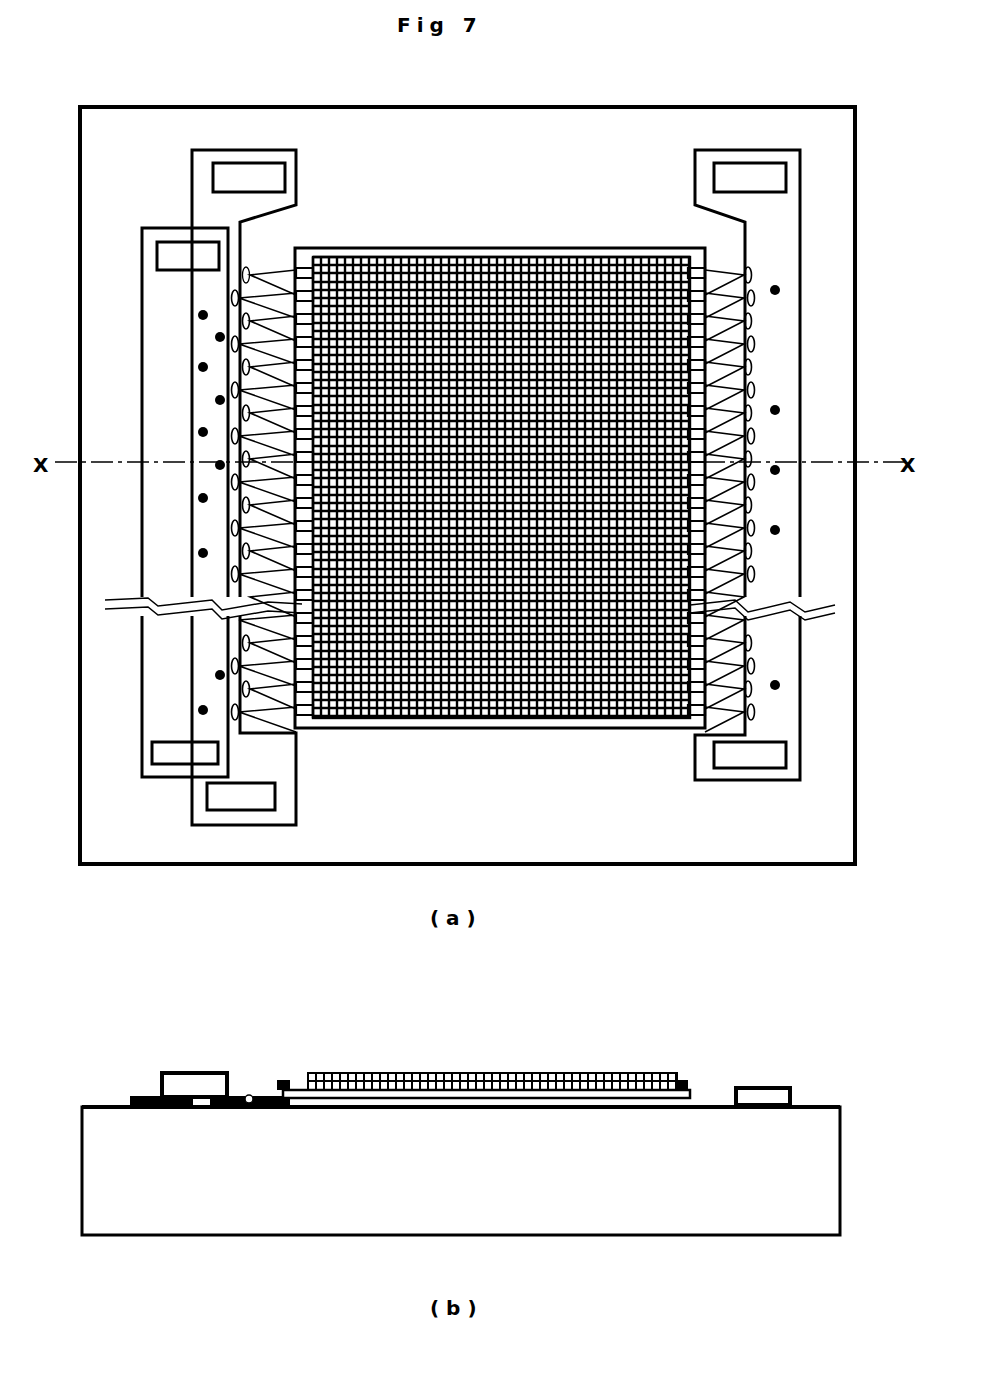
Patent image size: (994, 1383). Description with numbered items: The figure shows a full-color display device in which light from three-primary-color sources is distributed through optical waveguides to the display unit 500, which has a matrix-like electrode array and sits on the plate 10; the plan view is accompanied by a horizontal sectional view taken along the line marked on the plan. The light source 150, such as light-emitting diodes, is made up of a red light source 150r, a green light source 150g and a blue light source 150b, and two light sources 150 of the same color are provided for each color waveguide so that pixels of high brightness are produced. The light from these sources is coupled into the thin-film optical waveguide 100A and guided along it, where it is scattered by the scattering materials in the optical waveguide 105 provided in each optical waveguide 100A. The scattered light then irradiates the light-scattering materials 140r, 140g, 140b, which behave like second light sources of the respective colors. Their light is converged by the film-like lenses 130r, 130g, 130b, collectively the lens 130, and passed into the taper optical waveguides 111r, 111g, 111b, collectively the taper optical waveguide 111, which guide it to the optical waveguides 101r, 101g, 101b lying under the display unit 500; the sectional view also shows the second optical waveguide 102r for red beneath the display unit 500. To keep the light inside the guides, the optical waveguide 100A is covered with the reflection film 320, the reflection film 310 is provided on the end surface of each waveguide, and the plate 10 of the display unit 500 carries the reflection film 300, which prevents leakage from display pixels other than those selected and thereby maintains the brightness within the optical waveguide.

The plate 10 is at (468, 185).
The optical waveguide 100A is at (473, 661).
The scattering materials in the optical waveguide 105 is at (150, 655).
The lens 130 is at (248, 264).
The lens 130r is at (222, 466).
The lens 130b is at (206, 498).
The lens 130g is at (787, 445).
The light-scattering material 140r is at (215, 402).
The light-scattering material 140b is at (203, 315).
The light-scattering material 140g is at (777, 352).
The light source 150 is at (233, 172).
The light source 150r is at (297, 486).
The light source 150b is at (192, 255).
The light source 150g is at (753, 180).
The taper optical waveguide 111 is at (283, 723).
The taper optical waveguide 111r is at (265, 265).
The taper optical waveguide 111b is at (270, 318).
The taper optical waveguide 111g is at (725, 533).
The first optical waveguide 101r is at (332, 292).
The first optical waveguide 101g is at (706, 285).
The first optical waveguide 101b is at (345, 312).
The second optical waveguide 102r is at (308, 1075).
The reflection film 300 is at (465, 718).
The reflection film 310 is at (362, 730).
The reflection film 320 is at (777, 507).
The display 500 is at (480, 262).